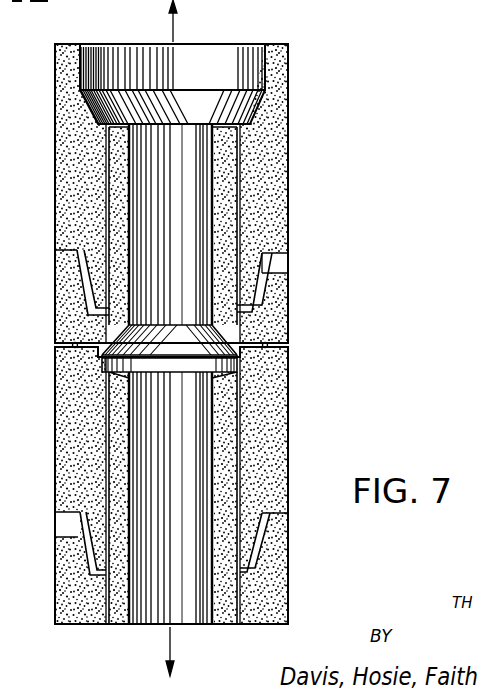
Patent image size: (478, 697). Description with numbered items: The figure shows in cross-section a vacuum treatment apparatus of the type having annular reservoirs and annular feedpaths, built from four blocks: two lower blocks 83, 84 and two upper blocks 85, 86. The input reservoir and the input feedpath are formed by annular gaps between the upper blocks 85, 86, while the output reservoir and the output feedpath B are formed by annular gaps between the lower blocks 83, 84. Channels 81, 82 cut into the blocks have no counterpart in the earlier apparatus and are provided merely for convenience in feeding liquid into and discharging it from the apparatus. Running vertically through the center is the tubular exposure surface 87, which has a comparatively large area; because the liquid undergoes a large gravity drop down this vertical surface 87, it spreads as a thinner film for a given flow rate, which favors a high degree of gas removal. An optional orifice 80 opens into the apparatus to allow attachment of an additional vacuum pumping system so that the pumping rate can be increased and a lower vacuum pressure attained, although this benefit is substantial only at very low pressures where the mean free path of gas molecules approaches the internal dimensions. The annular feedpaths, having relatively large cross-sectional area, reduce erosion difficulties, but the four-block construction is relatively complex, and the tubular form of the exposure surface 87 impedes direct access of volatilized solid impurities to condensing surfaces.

The orifice 80 is at (183, 610).
The channel 81 is at (280, 267).
The channel 82 is at (63, 527).
The lower block 83 is at (275, 600).
The lower block 84 is at (275, 375).
The upper block 85 is at (281, 286).
The upper block 86 is at (282, 210).
The exposure surface 87 is at (137, 233).
The output feedpath B is at (237, 180).